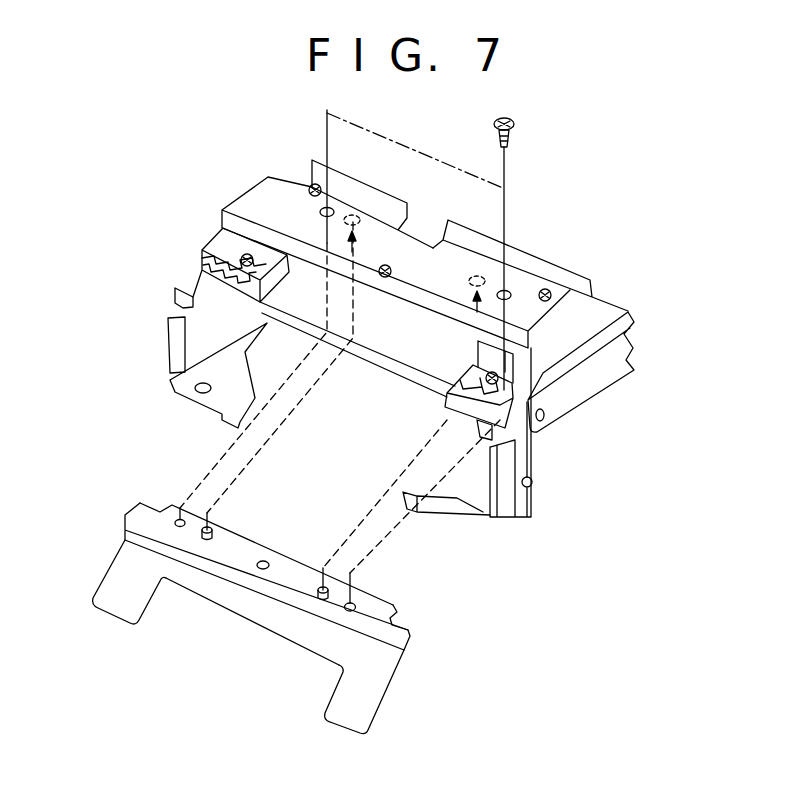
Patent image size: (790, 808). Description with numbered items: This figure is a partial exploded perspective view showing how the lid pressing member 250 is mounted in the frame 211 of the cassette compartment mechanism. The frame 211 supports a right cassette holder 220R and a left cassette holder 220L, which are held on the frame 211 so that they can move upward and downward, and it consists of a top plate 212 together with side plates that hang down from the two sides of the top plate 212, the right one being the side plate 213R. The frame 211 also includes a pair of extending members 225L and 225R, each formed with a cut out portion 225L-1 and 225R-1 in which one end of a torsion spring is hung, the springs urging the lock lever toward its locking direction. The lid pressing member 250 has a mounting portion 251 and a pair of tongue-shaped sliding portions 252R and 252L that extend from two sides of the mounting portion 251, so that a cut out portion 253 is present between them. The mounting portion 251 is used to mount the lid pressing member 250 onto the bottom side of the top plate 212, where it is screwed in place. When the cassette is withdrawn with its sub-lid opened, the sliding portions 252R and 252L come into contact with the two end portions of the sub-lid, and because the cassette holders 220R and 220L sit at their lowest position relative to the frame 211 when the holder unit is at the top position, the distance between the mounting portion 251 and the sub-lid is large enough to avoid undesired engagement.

The frame 211 is at (268, 179).
The top plate 212 is at (560, 305).
The side plate 213R is at (557, 447).
The left cassette holder 220L is at (154, 363).
The right cassette holder 220R is at (479, 519).
The extending member 225L is at (192, 276).
The cut out portion 225L-1 is at (226, 257).
The extending member 225R is at (474, 364).
The cut out portion 225R-1 is at (480, 412).
The lid pressing member 250 is at (408, 616).
The mounting portion 251 is at (243, 546).
The sliding portion 252L is at (117, 606).
The sliding portion 252R is at (365, 712).
The cut out portion 253 is at (235, 641).